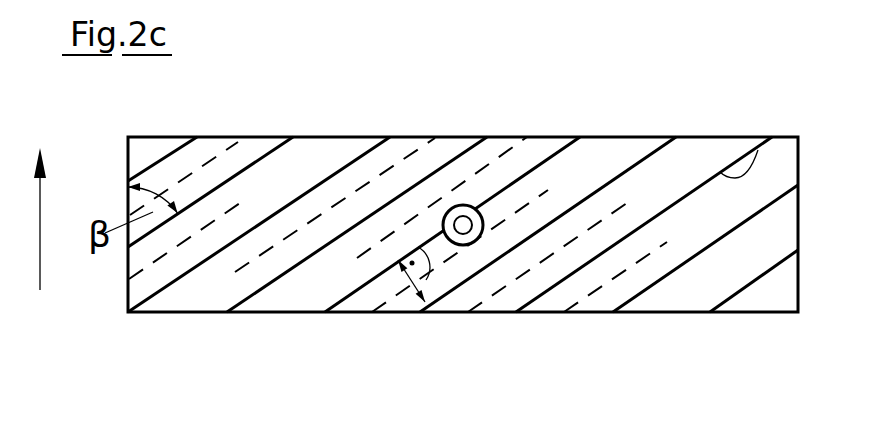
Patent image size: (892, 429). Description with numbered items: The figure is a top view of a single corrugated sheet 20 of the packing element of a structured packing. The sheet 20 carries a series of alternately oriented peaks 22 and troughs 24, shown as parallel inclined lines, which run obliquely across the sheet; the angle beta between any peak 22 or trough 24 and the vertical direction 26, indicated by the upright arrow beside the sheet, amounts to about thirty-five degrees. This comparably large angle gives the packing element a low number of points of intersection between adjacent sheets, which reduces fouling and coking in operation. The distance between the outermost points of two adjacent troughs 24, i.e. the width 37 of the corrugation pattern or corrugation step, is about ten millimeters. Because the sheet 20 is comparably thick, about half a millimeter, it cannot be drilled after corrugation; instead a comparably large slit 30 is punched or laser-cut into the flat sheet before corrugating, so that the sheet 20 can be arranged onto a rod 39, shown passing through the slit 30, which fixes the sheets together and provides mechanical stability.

The corrugated sheet 20 is at (614, 113).
The peak 22 is at (758, 150).
The trough 24 is at (537, 271).
The vertical direction 26 is at (40, 215).
The slit 30 is at (475, 208).
The width of the corrugation pattern 37 is at (403, 293).
The rod 39 is at (463, 225).